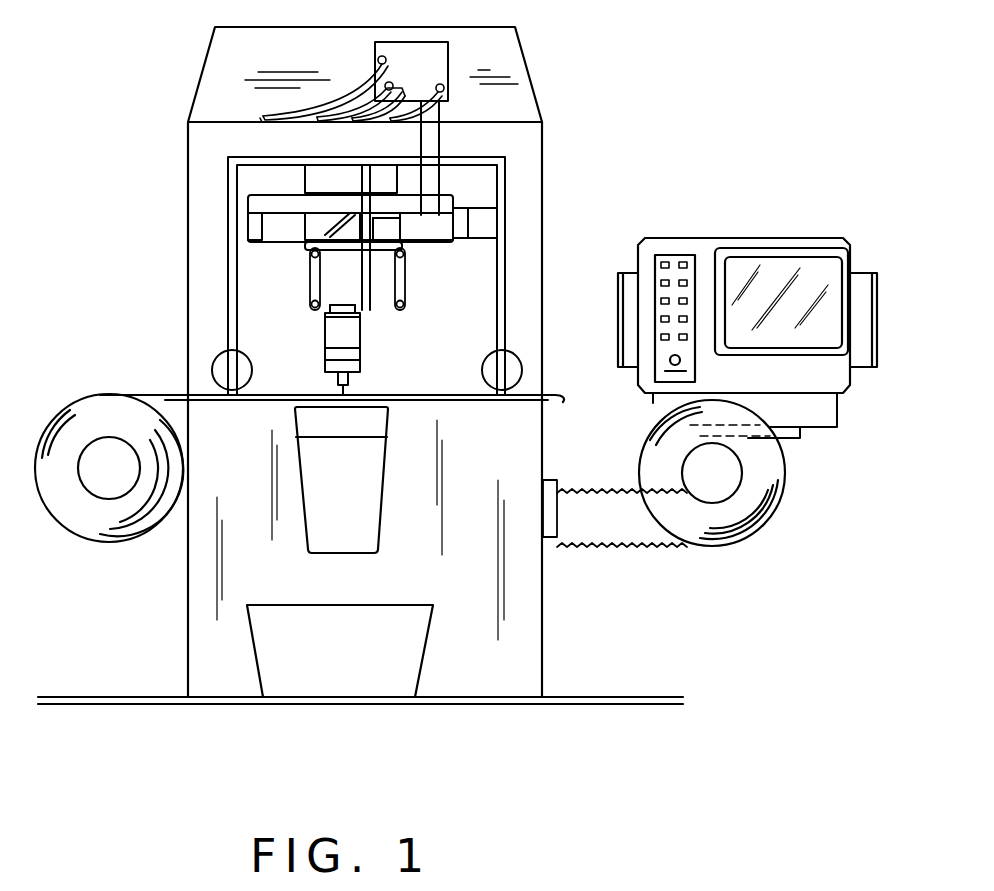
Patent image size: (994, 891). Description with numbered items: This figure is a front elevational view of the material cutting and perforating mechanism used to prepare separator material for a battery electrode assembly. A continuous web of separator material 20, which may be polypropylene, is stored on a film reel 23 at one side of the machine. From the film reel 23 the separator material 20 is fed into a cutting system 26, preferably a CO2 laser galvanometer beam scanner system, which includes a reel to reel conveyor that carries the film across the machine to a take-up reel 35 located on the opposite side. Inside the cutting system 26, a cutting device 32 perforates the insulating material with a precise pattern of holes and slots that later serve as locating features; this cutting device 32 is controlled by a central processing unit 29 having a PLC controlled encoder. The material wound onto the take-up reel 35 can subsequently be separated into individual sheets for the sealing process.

The separator material 20 is at (80, 425).
The film reel 23 is at (104, 477).
The cutting system 26 is at (563, 95).
The central processing unit 29 is at (707, 254).
The cutting device 32 is at (335, 332).
The take-up reel 35 is at (716, 470).